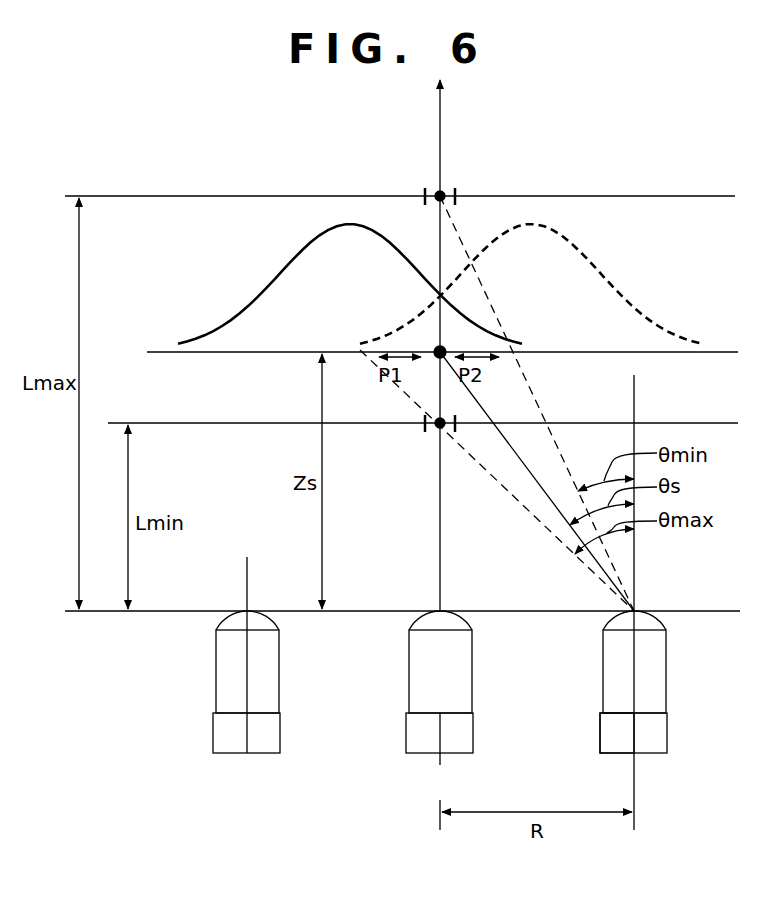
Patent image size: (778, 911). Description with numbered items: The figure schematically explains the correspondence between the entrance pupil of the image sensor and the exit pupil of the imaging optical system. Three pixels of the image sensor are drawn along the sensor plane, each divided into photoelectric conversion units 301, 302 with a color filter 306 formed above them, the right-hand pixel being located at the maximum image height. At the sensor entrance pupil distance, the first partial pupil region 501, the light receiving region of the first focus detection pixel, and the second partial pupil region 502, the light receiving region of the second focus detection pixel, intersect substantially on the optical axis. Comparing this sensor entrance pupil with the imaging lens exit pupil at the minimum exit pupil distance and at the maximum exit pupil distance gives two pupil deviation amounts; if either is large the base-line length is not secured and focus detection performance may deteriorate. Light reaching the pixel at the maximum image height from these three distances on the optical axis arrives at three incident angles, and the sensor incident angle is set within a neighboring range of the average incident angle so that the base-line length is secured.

The first partial pupil region 501 is at (265, 288).
The second partial pupil region 502 is at (614, 286).
The photoelectric conversion unit 301 is at (663, 737).
The photoelectric conversion unit 302 is at (603, 737).
The color filter 306 is at (655, 622).